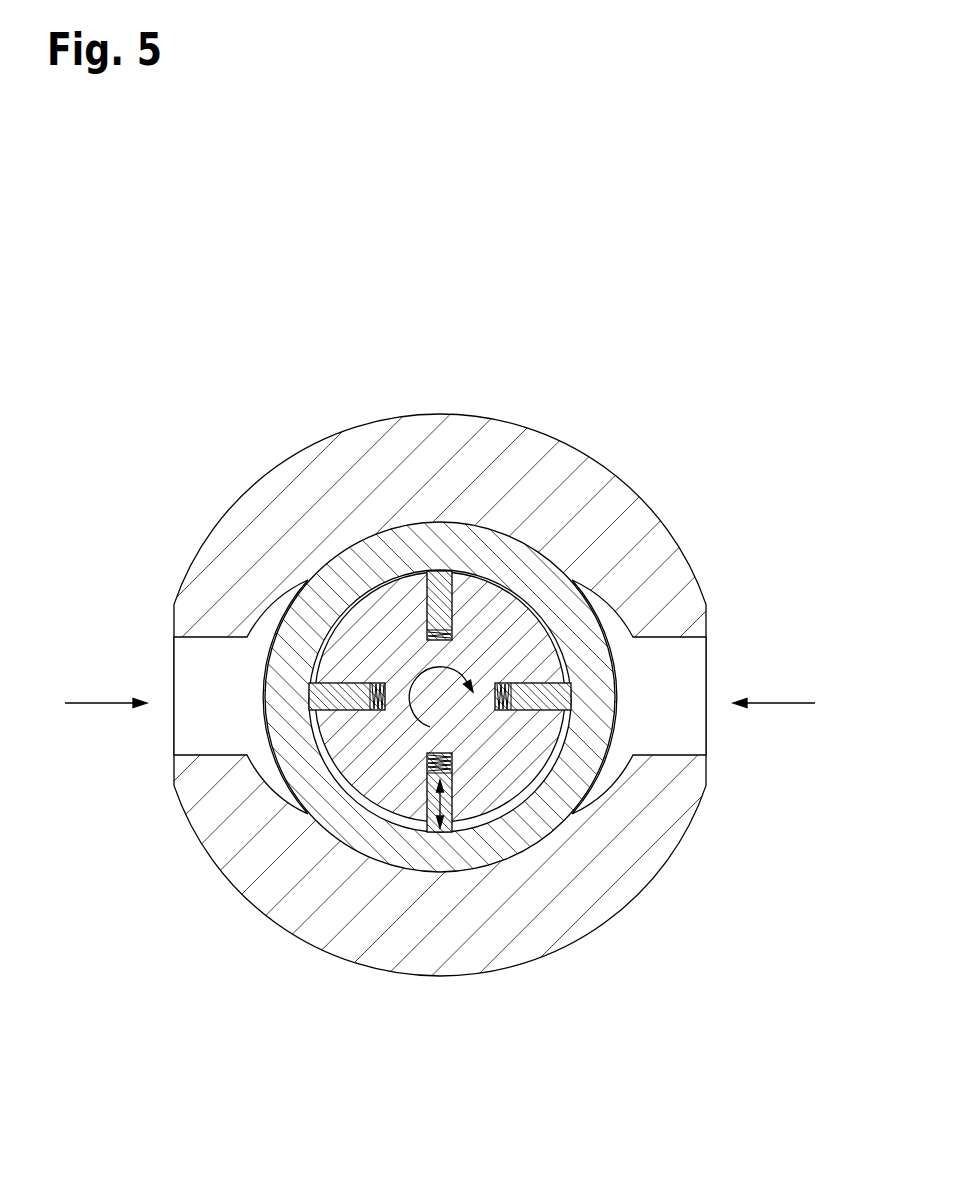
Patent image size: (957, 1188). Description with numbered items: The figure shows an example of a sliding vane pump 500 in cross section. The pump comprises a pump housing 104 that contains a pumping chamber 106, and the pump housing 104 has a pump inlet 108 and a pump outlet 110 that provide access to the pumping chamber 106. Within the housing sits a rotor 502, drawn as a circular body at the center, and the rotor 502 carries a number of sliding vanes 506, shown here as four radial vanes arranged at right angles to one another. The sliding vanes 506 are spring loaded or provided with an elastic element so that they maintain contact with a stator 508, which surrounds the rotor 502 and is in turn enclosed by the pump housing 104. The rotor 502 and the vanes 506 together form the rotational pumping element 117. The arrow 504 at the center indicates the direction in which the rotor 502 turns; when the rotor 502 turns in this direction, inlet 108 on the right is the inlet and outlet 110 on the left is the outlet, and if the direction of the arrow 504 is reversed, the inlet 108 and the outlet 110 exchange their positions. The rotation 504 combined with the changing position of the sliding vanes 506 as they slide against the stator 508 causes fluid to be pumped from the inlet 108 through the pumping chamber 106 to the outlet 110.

The sliding vane pump 500 is at (676, 374).
The pump housing 104 is at (312, 490).
The stator 508 is at (525, 833).
The pumping chamber 106 is at (487, 818).
The rotor 502 is at (396, 802).
The arrow 504 is at (414, 678).
The sliding vanes 506 is at (442, 585).
The rotational pumping element 117 is at (502, 589).
The pump outlet 110 is at (93, 703).
The pump inlet 108 is at (797, 703).